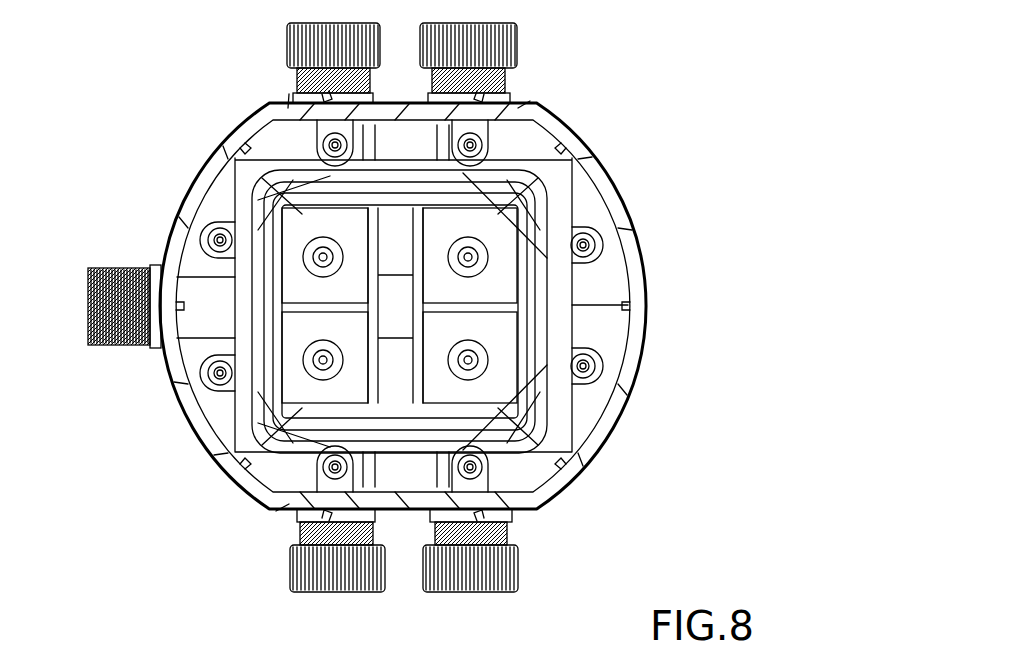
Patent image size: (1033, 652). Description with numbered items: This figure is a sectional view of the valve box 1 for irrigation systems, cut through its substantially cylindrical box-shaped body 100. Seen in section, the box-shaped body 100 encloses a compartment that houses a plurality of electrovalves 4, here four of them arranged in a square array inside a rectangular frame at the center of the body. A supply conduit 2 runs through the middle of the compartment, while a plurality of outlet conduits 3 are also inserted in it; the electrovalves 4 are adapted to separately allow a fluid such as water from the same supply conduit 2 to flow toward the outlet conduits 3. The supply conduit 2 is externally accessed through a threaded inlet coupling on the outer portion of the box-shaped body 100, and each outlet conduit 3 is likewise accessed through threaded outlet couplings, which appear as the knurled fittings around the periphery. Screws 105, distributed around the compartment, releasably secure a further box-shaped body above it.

The valve box 1 is at (640, 138).
The box-shaped body 100 is at (636, 414).
The screws 105 is at (318, 135).
The supply conduit 2 is at (402, 318).
The outlet conduits 3 is at (437, 145).
The electrovalves 4 is at (358, 296).